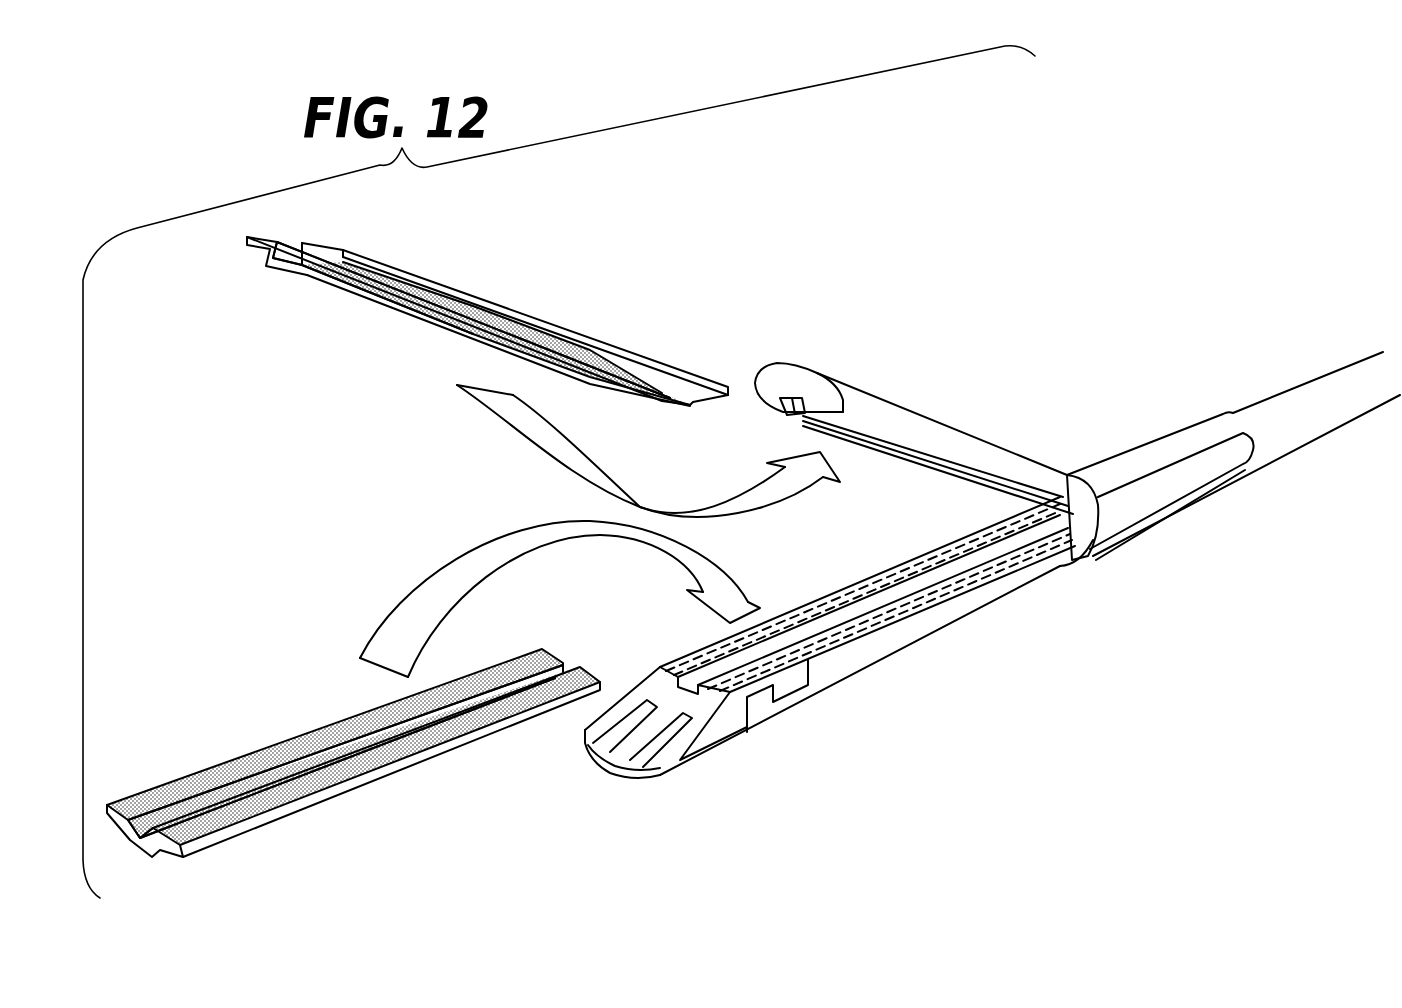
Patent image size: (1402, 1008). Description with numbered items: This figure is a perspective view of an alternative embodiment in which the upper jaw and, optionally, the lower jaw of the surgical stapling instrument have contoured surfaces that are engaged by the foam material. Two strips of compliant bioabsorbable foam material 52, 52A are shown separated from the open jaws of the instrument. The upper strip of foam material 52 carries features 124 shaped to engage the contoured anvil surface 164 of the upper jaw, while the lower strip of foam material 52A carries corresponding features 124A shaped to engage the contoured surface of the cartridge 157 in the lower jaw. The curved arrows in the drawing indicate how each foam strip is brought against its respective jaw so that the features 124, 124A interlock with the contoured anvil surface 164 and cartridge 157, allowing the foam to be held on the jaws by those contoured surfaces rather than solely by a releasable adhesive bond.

The foam material 52 is at (253, 243).
The features 124 is at (300, 268).
The foam material 52A is at (222, 757).
The features 124A is at (141, 848).
The anvil surface 164 is at (772, 403).
The cartridge 157 is at (937, 580).